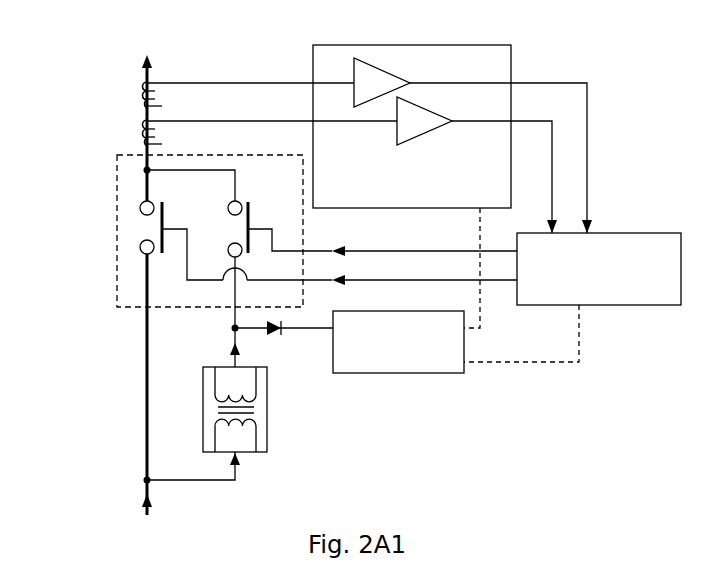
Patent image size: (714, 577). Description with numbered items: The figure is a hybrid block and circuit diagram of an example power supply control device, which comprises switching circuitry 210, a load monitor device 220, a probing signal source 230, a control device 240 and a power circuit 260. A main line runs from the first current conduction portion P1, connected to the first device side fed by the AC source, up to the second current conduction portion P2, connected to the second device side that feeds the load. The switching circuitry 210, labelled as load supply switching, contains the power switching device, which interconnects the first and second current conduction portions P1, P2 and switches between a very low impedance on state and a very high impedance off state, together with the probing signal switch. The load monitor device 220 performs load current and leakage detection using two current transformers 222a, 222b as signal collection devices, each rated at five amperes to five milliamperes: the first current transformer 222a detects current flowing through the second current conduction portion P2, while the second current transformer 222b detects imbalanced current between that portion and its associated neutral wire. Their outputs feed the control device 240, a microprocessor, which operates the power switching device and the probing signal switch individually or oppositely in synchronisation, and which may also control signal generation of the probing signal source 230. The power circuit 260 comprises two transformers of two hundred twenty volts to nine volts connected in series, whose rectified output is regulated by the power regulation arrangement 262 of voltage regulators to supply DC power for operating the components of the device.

The switching circuitry 210 is at (116, 195).
The load monitor device 220 is at (452, 173).
The first current transformer 222a is at (128, 93).
The second current transformer 222b is at (128, 133).
The probing signal source 230 is at (248, 404).
The control device 240 is at (513, 283).
The power circuit 260 is at (248, 404).
The power regulation arrangement 262 is at (348, 356).
The first current conduction portion P1 is at (135, 408).
The second current conduction portion P2 is at (163, 63).